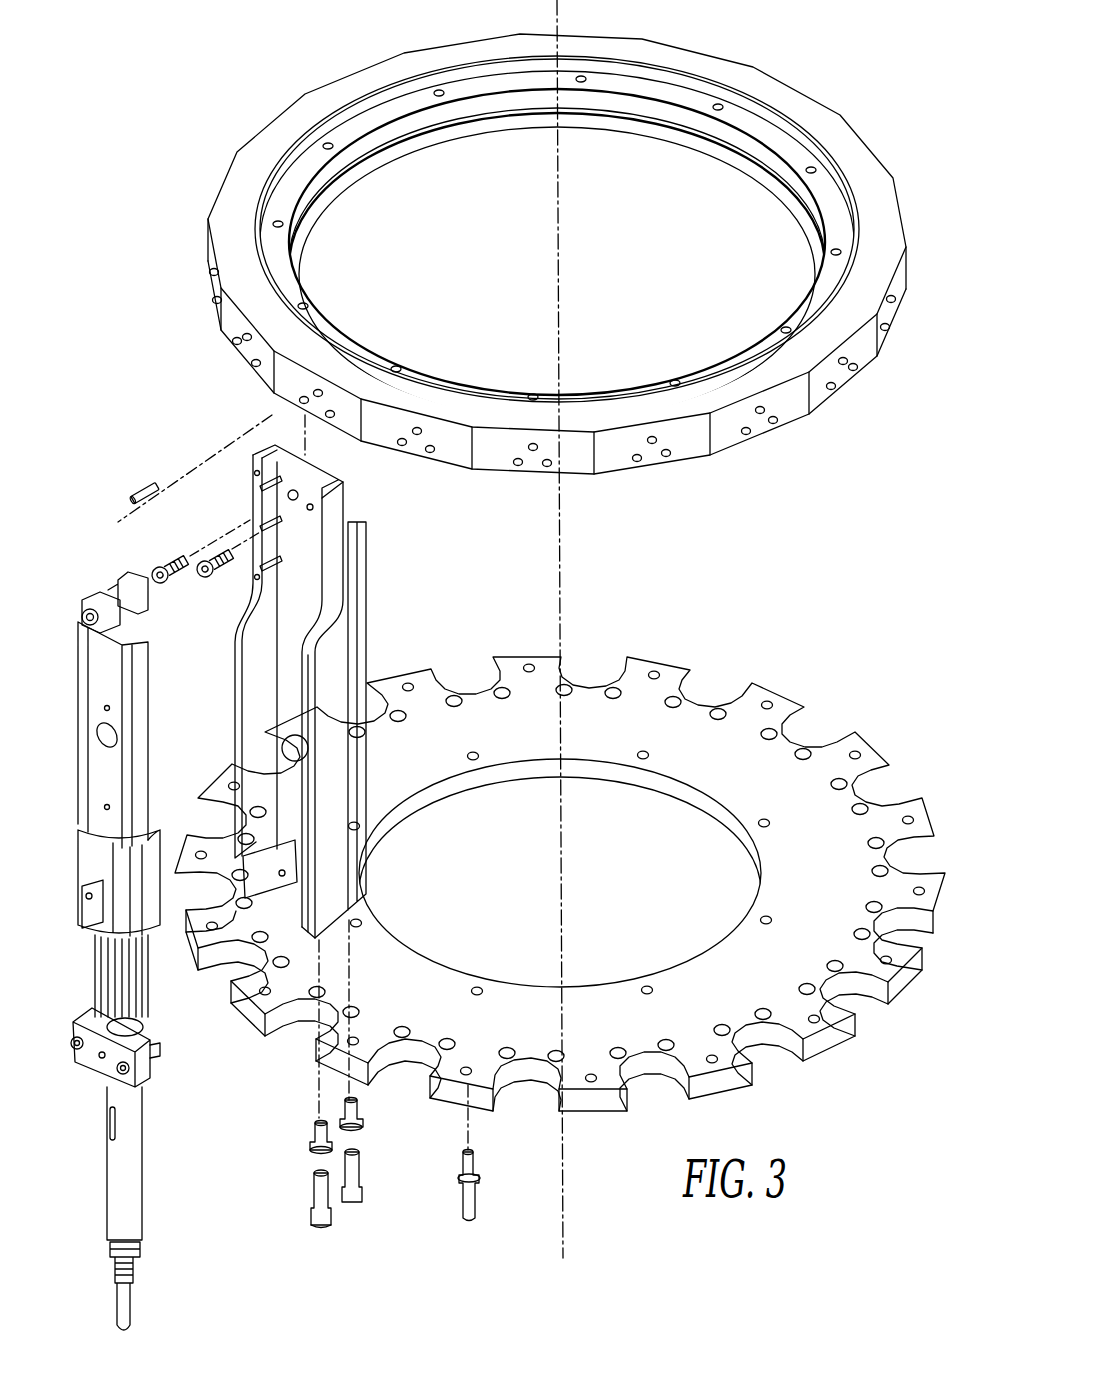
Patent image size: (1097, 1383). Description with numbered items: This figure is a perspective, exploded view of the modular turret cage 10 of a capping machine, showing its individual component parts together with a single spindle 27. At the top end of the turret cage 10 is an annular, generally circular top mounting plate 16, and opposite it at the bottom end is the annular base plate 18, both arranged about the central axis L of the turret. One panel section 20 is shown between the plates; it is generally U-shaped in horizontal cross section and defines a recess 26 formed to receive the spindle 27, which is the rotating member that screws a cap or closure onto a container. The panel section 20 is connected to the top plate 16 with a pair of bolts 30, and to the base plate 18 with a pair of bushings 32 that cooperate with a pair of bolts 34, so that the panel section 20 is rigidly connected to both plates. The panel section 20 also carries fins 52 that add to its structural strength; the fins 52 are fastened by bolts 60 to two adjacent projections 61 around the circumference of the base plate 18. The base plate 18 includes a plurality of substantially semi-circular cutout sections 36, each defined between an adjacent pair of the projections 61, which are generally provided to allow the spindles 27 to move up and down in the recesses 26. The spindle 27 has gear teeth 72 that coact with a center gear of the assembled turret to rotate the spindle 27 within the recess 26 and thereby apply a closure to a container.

The central axis L is at (561, 22).
The modular turret cage 10 is at (270, 90).
The top mounting plate 16 is at (792, 64).
The base plate 18 is at (560, 914).
The panel section 20 is at (230, 676).
The recess 26 is at (292, 680).
The spindle 27 is at (135, 951).
The bolts 30 is at (205, 585).
The bushings 32 is at (312, 1135).
The bolts 34 is at (311, 1208).
The cutout sections 36 is at (652, 1090).
The fins 52 is at (330, 843).
The bolts 60 is at (480, 1196).
The projections 61 is at (460, 1098).
The gear teeth 72 is at (150, 988).